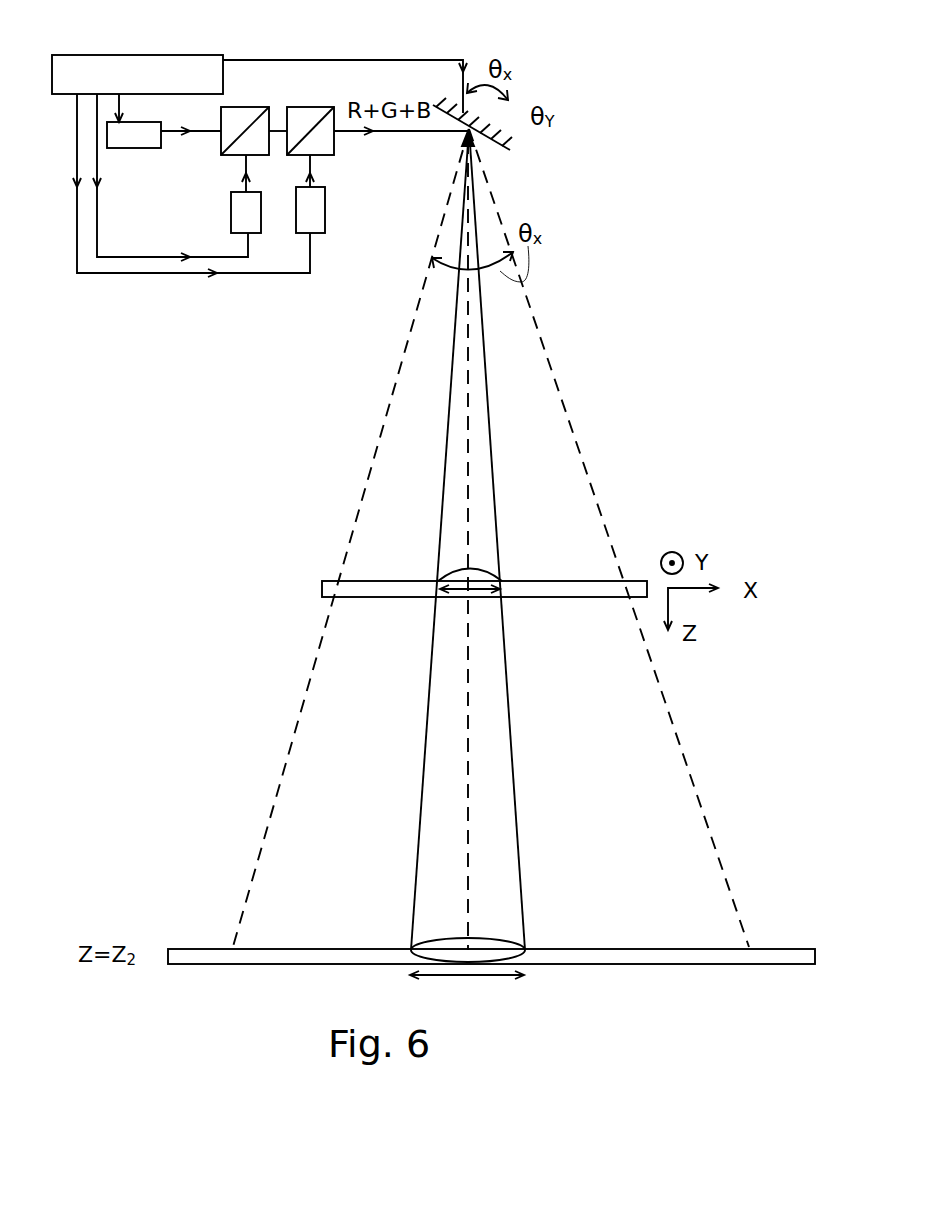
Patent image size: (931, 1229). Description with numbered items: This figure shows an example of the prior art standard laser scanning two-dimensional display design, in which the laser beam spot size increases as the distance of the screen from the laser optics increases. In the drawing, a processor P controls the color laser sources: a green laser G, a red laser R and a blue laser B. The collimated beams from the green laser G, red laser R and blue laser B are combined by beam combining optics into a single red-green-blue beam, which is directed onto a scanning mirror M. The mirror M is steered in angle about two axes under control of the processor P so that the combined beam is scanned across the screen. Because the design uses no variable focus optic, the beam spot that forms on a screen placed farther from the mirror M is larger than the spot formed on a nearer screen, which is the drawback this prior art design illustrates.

The processor P is at (137, 58).
The green light source G is at (134, 136).
The red light source R is at (246, 212).
The blue light source B is at (310, 210).
The scanning mirror M is at (487, 135).